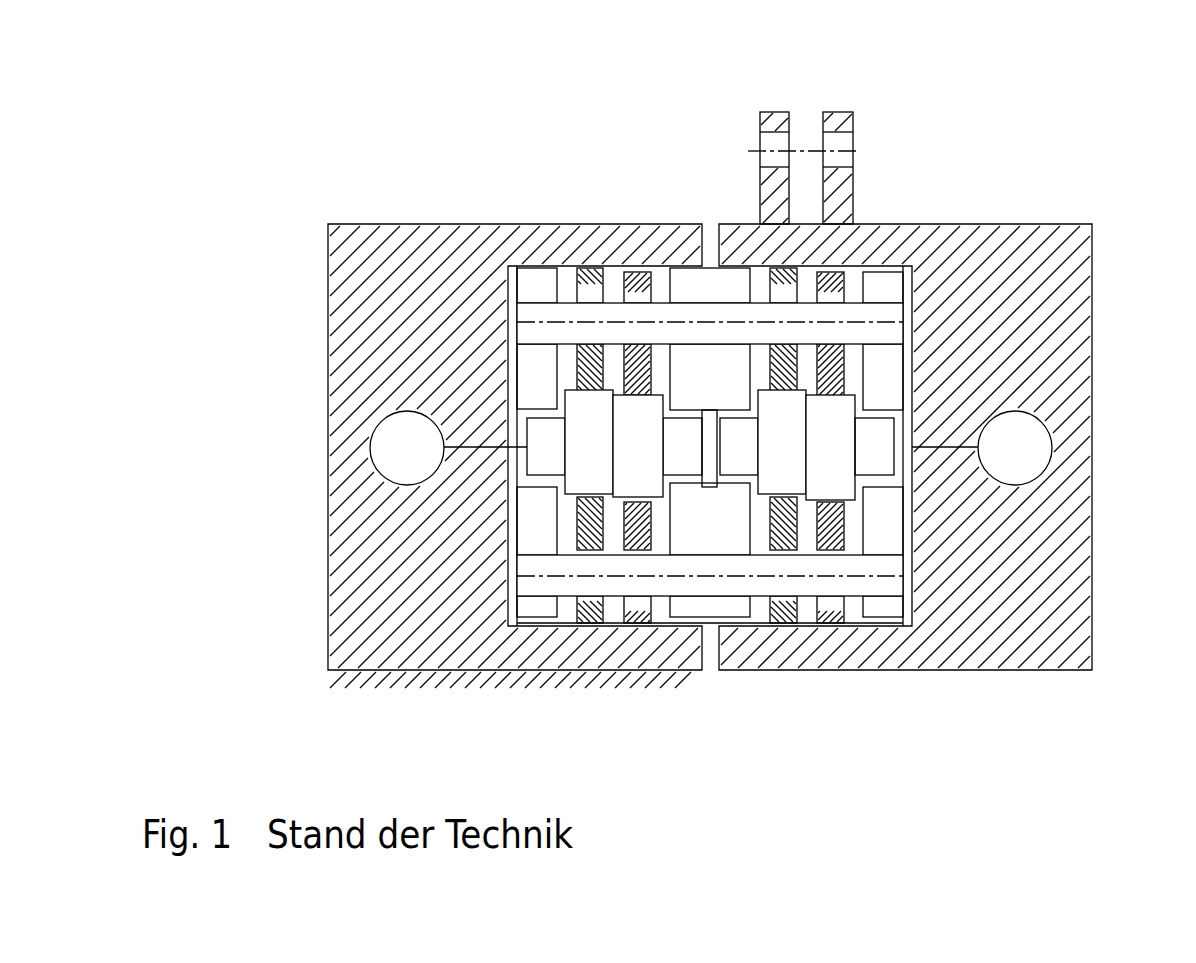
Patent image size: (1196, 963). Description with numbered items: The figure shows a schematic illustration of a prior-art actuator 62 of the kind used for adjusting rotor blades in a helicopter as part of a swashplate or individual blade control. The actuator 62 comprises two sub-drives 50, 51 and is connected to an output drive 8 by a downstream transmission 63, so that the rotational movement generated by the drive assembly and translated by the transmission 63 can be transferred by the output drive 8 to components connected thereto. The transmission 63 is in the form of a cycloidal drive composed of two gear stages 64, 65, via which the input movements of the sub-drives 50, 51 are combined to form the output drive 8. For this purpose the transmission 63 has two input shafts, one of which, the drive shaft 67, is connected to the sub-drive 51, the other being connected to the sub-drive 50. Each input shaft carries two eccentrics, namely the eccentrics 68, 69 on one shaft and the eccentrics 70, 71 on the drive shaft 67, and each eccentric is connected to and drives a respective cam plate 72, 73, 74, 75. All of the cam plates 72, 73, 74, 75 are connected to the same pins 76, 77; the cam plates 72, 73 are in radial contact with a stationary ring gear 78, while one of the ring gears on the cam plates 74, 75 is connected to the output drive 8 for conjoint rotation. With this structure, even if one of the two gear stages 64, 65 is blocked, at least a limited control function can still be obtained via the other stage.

The output drive 8 is at (778, 110).
The sub-drive 50 is at (390, 441).
The sub-drive 51 is at (1020, 434).
The actuator 62 is at (304, 116).
The transmission 63 is at (741, 695).
The gear stage 64 is at (448, 194).
The gear stage 65 is at (951, 205).
The drive shaft 67 is at (947, 447).
The eccentric 68 is at (575, 484).
The eccentric 69 is at (620, 494).
The eccentric 70 is at (800, 497).
The eccentric 71 is at (838, 483).
The cam plate 72 is at (593, 267).
The cam plate 73 is at (643, 273).
The cam plate 74 is at (786, 610).
The cam plate 75 is at (837, 280).
The pin 76 is at (528, 313).
The pin 77 is at (530, 580).
The ring gear 78 is at (558, 232).